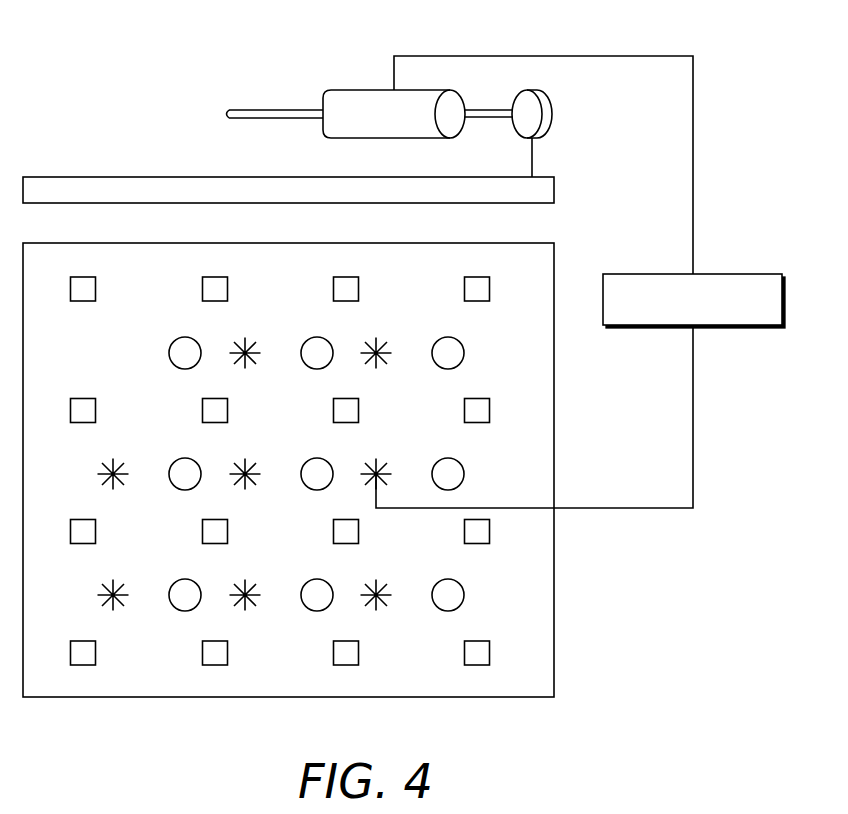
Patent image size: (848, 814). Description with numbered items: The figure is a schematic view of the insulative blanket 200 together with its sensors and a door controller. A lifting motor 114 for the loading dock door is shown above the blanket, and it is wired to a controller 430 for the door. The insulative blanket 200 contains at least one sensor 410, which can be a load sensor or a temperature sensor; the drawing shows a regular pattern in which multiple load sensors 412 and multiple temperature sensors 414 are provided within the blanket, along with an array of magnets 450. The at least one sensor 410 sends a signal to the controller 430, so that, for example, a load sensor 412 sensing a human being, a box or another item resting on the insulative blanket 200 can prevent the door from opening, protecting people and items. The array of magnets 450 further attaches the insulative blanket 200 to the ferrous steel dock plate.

The lifting motor 114 is at (360, 88).
The controller 430 is at (765, 274).
The insulative blanket 200 is at (541, 590).
The array of magnets 450 is at (184, 337).
The load sensor 412 is at (115, 470).
The sensor 410 is at (380, 468).
The temperature sensor 414 is at (228, 652).